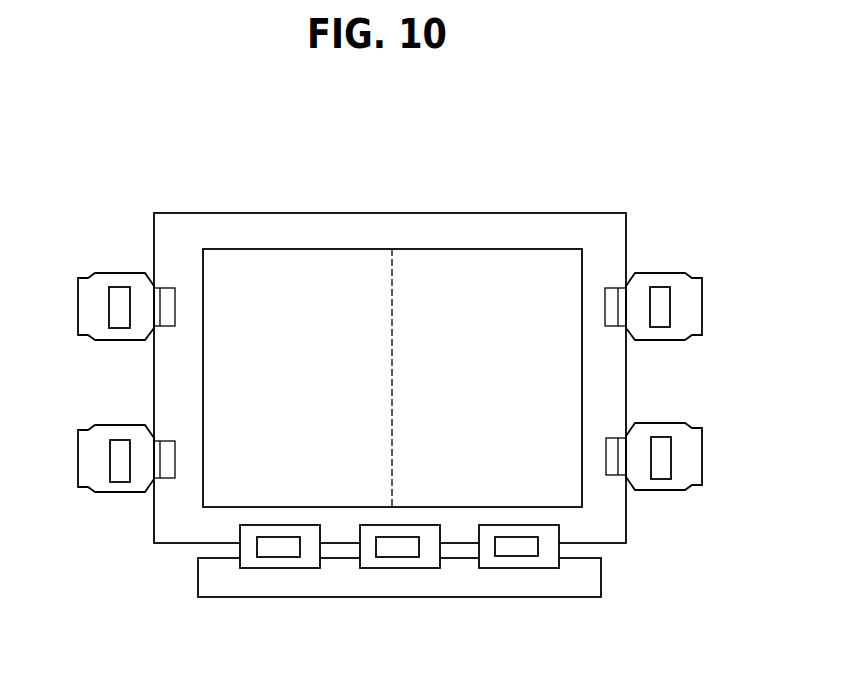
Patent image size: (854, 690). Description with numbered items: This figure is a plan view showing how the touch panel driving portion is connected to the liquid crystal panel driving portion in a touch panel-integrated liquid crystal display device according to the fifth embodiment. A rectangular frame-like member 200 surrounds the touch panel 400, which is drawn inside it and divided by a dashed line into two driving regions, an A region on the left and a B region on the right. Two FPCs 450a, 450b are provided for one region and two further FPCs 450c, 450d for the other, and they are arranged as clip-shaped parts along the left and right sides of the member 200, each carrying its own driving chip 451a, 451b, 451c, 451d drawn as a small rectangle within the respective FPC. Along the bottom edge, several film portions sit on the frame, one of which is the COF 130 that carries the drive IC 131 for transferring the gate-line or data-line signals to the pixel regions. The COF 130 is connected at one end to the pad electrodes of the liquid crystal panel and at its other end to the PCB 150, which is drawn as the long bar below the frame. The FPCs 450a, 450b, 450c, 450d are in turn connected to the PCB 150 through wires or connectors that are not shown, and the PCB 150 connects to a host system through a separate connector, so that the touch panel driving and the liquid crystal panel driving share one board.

The frame 200 is at (342, 212).
The touch panel 400 is at (478, 266).
The PCB 150 is at (390, 583).
The COF 130 is at (540, 560).
The drive IC 131 is at (510, 548).
The FPC 450a is at (85, 462).
The FPC 450b is at (118, 273).
The FPC 450c is at (695, 307).
The FPC 450d is at (695, 457).
The driving chip 451a is at (120, 473).
The driving chip 451b is at (115, 308).
The driving chip 451c is at (662, 322).
The driving chip 451d is at (661, 473).